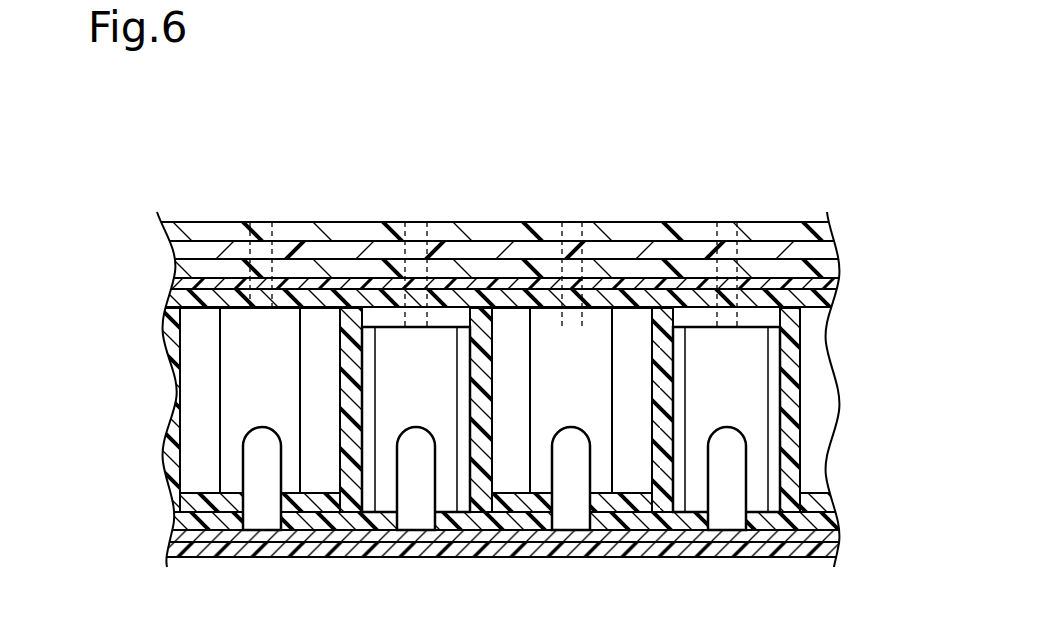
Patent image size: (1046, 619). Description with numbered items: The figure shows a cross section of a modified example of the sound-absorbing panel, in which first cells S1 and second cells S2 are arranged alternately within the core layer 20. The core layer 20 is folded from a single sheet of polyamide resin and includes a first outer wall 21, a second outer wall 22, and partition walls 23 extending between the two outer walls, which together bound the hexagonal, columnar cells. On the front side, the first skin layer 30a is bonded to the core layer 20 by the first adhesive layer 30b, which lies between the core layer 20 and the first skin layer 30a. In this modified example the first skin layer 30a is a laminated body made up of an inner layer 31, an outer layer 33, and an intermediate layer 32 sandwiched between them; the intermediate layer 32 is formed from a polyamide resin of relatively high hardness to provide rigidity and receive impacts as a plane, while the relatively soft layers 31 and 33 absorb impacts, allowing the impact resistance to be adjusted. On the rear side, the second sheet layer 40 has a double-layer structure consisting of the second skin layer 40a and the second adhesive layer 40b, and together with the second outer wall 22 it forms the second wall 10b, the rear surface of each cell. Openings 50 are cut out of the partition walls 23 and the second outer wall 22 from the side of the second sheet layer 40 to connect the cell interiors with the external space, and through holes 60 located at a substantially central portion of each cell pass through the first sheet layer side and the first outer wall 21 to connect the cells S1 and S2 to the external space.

The second wall 10b is at (504, 548).
The core layer 20 is at (528, 409).
The first outer wall 21 is at (835, 297).
The second outer wall 22 is at (165, 517).
The partition wall 23 is at (797, 397).
The first skin layer 30a is at (445, 253).
The first adhesive layer 30b is at (832, 288).
The inner layer 31 is at (471, 277).
The intermediate layer 32 is at (163, 260).
The outer layer 33 is at (158, 235).
The second sheet layer 40 is at (539, 561).
The second skin layer 40a is at (832, 551).
The second adhesive layer 40b is at (830, 537).
The opening 50 is at (397, 483).
The through hole 60 is at (418, 215).
The first cell S1 is at (440, 337).
The second cell S2 is at (588, 337).